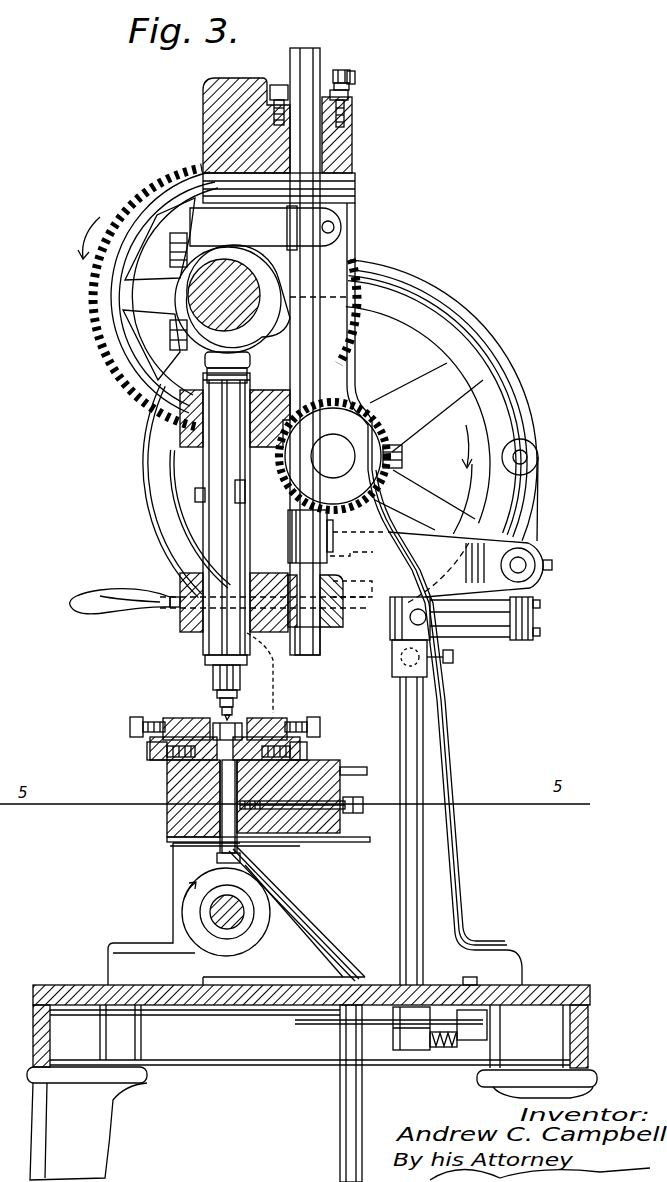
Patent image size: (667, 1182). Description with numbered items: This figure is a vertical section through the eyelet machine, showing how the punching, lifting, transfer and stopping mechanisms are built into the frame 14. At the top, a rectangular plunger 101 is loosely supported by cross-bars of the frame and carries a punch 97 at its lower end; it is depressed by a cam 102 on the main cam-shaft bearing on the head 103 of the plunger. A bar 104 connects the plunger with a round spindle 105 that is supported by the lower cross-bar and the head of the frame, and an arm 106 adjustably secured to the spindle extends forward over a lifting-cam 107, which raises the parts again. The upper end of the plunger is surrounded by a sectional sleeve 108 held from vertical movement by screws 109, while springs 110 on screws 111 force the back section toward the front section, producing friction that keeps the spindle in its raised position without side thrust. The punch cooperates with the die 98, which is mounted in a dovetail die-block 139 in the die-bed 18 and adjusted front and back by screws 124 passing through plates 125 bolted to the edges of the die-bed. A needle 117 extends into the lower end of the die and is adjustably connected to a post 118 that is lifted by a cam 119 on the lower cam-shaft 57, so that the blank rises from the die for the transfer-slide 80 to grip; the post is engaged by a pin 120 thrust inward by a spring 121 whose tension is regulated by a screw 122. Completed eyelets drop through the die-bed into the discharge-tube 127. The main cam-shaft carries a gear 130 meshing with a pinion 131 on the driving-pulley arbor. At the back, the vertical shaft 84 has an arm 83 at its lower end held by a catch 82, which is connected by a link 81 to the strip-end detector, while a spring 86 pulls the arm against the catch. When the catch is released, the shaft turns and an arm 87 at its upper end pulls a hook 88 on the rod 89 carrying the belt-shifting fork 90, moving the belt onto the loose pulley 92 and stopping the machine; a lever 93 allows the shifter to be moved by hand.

The frame 14 is at (167, 822).
The die-bed 18 is at (188, 296).
The lower cam-shaft 57 is at (210, 912).
The transfer-slide 80 is at (235, 716).
The link 81 is at (383, 1030).
The catch 82 is at (480, 1010).
The arm 83 is at (446, 1007).
The vertical shaft 84 is at (402, 888).
The spring 86 is at (446, 1050).
The arm 87 is at (492, 640).
The hook 88 is at (528, 642).
The rod 89 is at (532, 572).
The belt-shifting fork 90 is at (519, 476).
The loose pulley 92 is at (445, 363).
The lever 93 is at (170, 598).
The punch 97 is at (223, 717).
The die 98 is at (213, 718).
The plunger 101 is at (215, 468).
The cam 102 is at (258, 348).
The head 103 is at (210, 366).
The bar 104 is at (319, 553).
The spindle 105 is at (325, 336).
The arm 106 is at (265, 228).
The lifting-cam 107 is at (178, 254).
The sectional sleeve 108 is at (292, 78).
The screws 109 is at (352, 120).
The springs 110 is at (344, 70).
The screws 111 is at (355, 76).
The needles 117 is at (167, 790).
The posts 118 is at (220, 840).
The cams 119 is at (254, 942).
The pins 120 is at (310, 843).
The spring 121 is at (360, 780).
The screw 122 is at (357, 800).
The screws 124 is at (130, 727).
The plates 125 is at (155, 740).
The discharge-tube 127 is at (431, 594).
The gear 130 is at (95, 308).
The pinion 131 is at (378, 436).
The die-block 139 is at (263, 713).